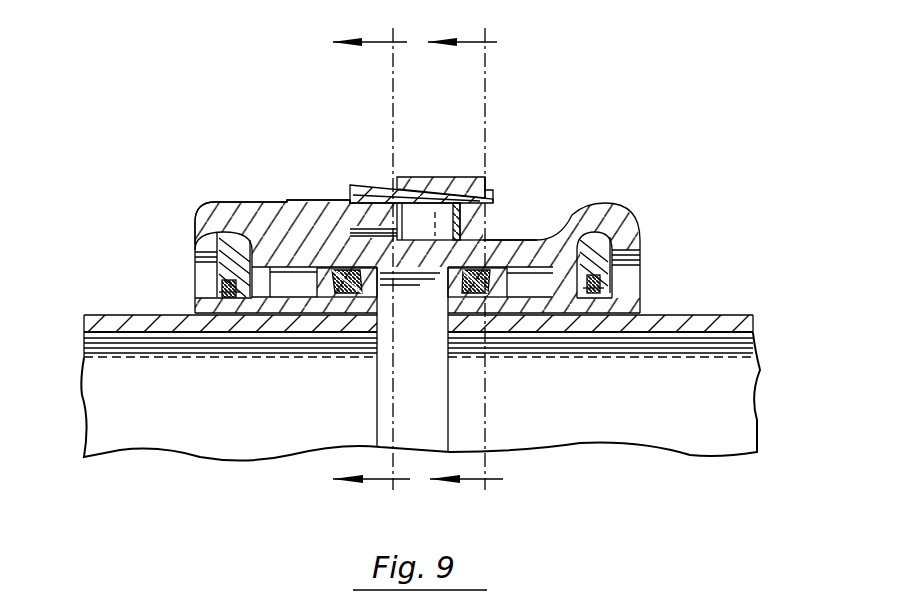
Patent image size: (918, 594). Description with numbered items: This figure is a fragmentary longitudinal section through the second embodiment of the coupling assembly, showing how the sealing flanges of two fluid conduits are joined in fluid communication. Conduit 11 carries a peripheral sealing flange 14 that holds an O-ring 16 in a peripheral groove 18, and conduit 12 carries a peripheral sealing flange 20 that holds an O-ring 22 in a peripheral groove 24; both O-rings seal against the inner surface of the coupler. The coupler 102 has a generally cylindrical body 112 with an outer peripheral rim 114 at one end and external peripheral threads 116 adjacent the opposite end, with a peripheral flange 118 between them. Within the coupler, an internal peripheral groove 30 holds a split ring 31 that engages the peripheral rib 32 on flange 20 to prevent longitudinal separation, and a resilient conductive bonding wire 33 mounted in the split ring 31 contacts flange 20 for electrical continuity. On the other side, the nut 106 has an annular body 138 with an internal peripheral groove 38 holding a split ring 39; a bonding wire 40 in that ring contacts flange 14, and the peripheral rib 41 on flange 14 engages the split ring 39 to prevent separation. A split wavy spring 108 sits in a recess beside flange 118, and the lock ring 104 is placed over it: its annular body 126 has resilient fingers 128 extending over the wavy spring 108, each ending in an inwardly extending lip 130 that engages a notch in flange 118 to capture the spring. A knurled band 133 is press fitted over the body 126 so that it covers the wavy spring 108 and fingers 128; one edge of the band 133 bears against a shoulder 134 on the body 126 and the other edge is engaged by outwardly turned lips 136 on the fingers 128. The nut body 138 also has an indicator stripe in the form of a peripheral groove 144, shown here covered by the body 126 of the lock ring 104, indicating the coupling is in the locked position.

The conduit 11 is at (50, 388).
The conduit 12 is at (785, 387).
The peripheral sealing flange 14 is at (227, 303).
The O-ring 16 is at (348, 294).
The peripheral groove 18 is at (340, 284).
The peripheral sealing flange 20 is at (626, 306).
The O-ring 22 is at (503, 284).
The peripheral groove 24 is at (480, 288).
The internal peripheral groove 30 is at (607, 252).
The split ring 31 is at (600, 266).
The peripheral rib 32 is at (557, 302).
The bonding wire 33 is at (600, 278).
The internal peripheral groove 38 is at (225, 233).
The split ring 39 is at (233, 263).
The bonding wire 40 is at (223, 284).
The peripheral rib 41 is at (337, 272).
The coupler 102 is at (665, 226).
The lock ring 104 is at (378, 157).
The nut 106 is at (183, 162).
The wavy spring 108 is at (455, 213).
The cylindrical body 112 is at (517, 240).
The outer peripheral rim 114 is at (598, 207).
The external peripheral threads 116 is at (290, 243).
The peripheral flange 118 is at (490, 228).
The annular body 126 is at (345, 183).
The resilient fingers 128 is at (468, 176).
The inwardly extending lip 130 is at (497, 206).
The knurled band 133 is at (403, 176).
The shoulder 134 is at (455, 176).
The outwardly turned lips 136 is at (488, 186).
The annular body 138 is at (300, 201).
The peripheral groove 144 is at (345, 197).